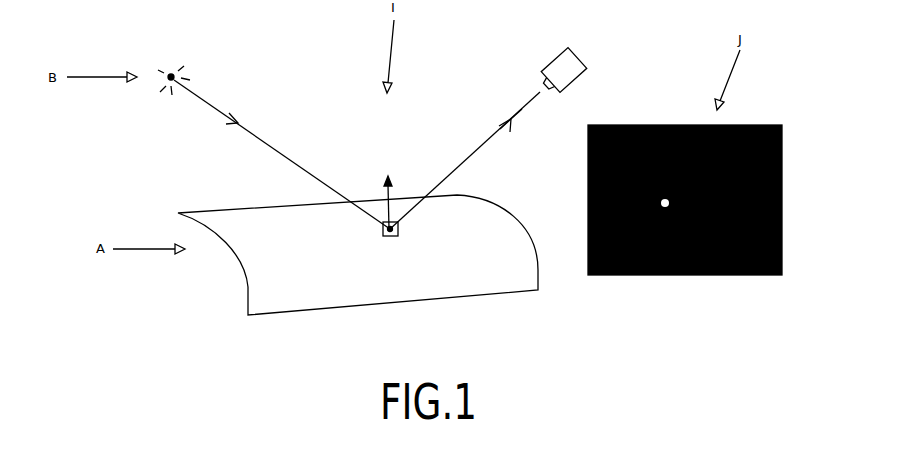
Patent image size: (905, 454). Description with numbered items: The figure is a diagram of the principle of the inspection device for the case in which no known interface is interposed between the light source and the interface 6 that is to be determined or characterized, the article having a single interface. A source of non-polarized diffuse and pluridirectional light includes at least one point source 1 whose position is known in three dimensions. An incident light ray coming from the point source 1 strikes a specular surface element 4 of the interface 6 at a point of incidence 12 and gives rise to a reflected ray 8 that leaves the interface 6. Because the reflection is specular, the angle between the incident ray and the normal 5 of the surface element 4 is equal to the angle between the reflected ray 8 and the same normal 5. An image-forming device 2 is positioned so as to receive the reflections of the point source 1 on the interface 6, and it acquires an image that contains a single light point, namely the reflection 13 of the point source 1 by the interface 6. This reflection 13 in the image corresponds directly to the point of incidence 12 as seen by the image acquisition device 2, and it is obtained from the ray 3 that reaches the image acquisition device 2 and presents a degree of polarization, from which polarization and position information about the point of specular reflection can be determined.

The point source 1 is at (167, 72).
The image-forming device 2 is at (553, 62).
The ray 3 is at (515, 114).
The specular surface element 4 is at (392, 237).
The normal 5 is at (388, 197).
The interface 6 is at (292, 314).
The reflected ray 8 is at (418, 205).
The point of incidence 12 is at (382, 233).
The reflection 13 is at (664, 199).